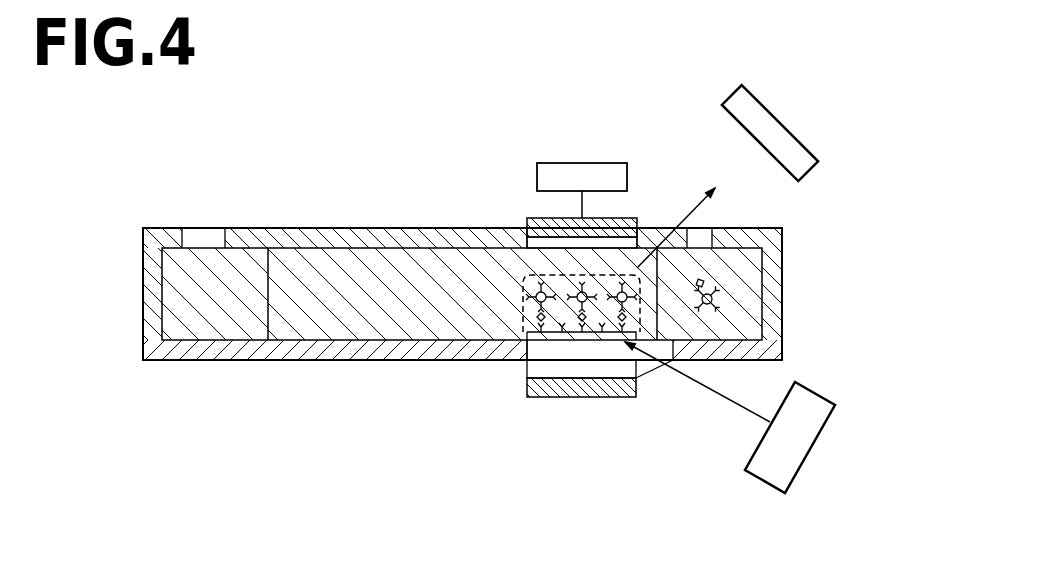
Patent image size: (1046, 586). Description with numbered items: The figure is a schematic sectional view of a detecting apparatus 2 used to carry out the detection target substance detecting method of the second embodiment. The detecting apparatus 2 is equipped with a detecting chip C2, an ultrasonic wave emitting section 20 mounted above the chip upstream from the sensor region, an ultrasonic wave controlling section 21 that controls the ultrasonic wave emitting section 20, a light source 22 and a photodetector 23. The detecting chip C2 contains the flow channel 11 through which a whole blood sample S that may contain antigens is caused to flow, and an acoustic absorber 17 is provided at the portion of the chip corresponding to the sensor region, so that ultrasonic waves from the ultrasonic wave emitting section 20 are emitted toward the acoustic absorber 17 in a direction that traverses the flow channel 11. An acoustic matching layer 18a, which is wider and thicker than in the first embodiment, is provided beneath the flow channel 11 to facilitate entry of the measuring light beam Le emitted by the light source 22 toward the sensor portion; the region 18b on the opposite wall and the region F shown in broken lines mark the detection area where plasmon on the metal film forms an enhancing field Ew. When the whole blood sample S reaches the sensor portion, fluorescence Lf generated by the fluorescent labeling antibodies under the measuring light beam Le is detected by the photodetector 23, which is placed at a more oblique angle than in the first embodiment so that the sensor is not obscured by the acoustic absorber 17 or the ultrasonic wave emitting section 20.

The detecting apparatus 2 is at (146, 147).
The whole blood sample S is at (200, 262).
The flow channel 11 is at (337, 258).
The detecting chip C2 is at (806, 292).
The ultrasonic wave emitting section 20 is at (633, 218).
The upper window 18b is at (522, 240).
The ultrasonic wave controlling section 21 is at (608, 168).
The acoustic matching layer 18a is at (535, 351).
The acoustic absorber 17 is at (558, 390).
The detection region F is at (523, 287).
The enhancing field Ew is at (530, 300).
The fluorescence Lf is at (716, 196).
The measuring light beam Le is at (733, 408).
The photodetector 23 is at (809, 165).
The light source 22 is at (818, 442).